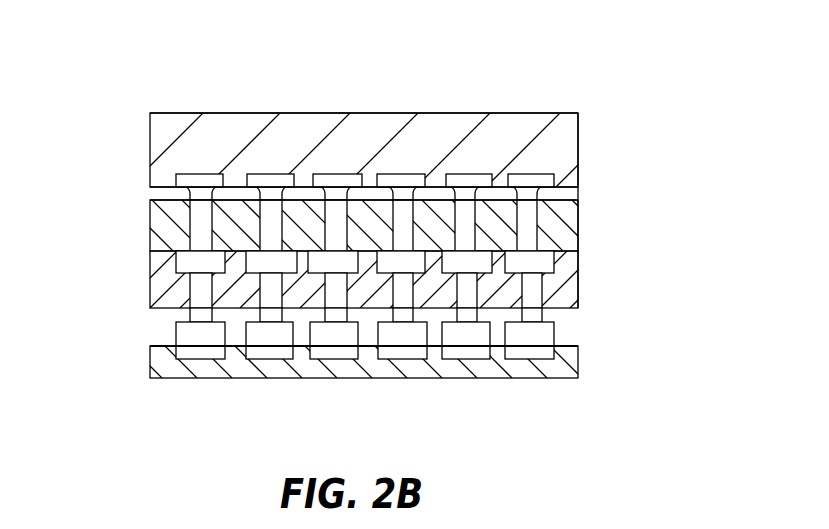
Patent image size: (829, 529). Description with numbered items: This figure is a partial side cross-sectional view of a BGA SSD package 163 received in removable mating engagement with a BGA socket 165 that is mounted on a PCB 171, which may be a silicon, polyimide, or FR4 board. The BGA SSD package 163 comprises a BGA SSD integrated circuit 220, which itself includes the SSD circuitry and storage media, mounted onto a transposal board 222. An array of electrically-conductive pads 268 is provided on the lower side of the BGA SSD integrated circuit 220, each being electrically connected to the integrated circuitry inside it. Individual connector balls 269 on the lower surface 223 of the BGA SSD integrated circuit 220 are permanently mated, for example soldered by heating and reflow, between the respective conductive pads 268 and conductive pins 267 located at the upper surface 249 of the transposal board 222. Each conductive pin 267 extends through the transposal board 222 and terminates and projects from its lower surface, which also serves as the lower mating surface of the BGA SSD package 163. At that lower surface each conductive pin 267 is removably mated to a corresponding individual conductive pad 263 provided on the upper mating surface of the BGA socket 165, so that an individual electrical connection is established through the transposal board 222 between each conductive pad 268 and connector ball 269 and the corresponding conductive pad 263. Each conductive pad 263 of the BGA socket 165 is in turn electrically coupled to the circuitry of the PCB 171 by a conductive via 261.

The BGA SSD integrated circuit 220 is at (148, 152).
The lower surface 223 is at (160, 188).
The electrically-conductive pads 268 is at (208, 182).
The connector balls 269 is at (403, 188).
The conductive pins 267 is at (547, 195).
The upper surface 249 is at (570, 198).
The transposal board 222 is at (578, 230).
The BGA SSD package 163 is at (665, 112).
The BGA socket 165 is at (148, 285).
The conductive pads 263 is at (202, 277).
The PCB 171 is at (580, 372).
The conductive via 261 is at (468, 288).